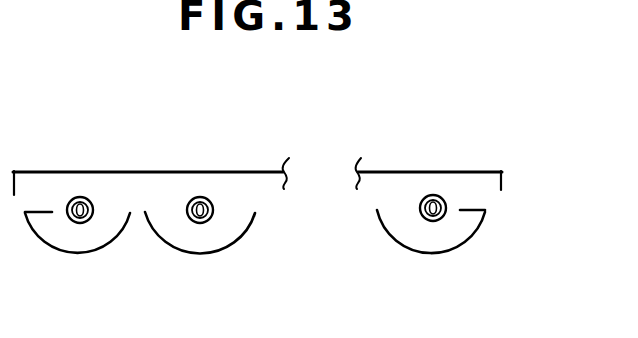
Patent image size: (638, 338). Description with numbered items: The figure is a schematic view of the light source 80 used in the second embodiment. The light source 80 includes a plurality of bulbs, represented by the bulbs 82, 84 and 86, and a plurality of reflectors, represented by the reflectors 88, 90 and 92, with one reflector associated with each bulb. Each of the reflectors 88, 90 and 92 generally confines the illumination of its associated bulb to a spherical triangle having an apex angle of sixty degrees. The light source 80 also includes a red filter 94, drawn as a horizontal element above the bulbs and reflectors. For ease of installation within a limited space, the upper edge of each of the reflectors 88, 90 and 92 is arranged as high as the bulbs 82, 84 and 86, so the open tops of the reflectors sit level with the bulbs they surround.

The light source 80 is at (493, 162).
The bulb 82 is at (94, 207).
The bulb 84 is at (215, 211).
The bulb 86 is at (420, 206).
The reflector 88 is at (60, 254).
The reflector 90 is at (197, 254).
The reflector 92 is at (402, 244).
The red filter 94 is at (167, 171).